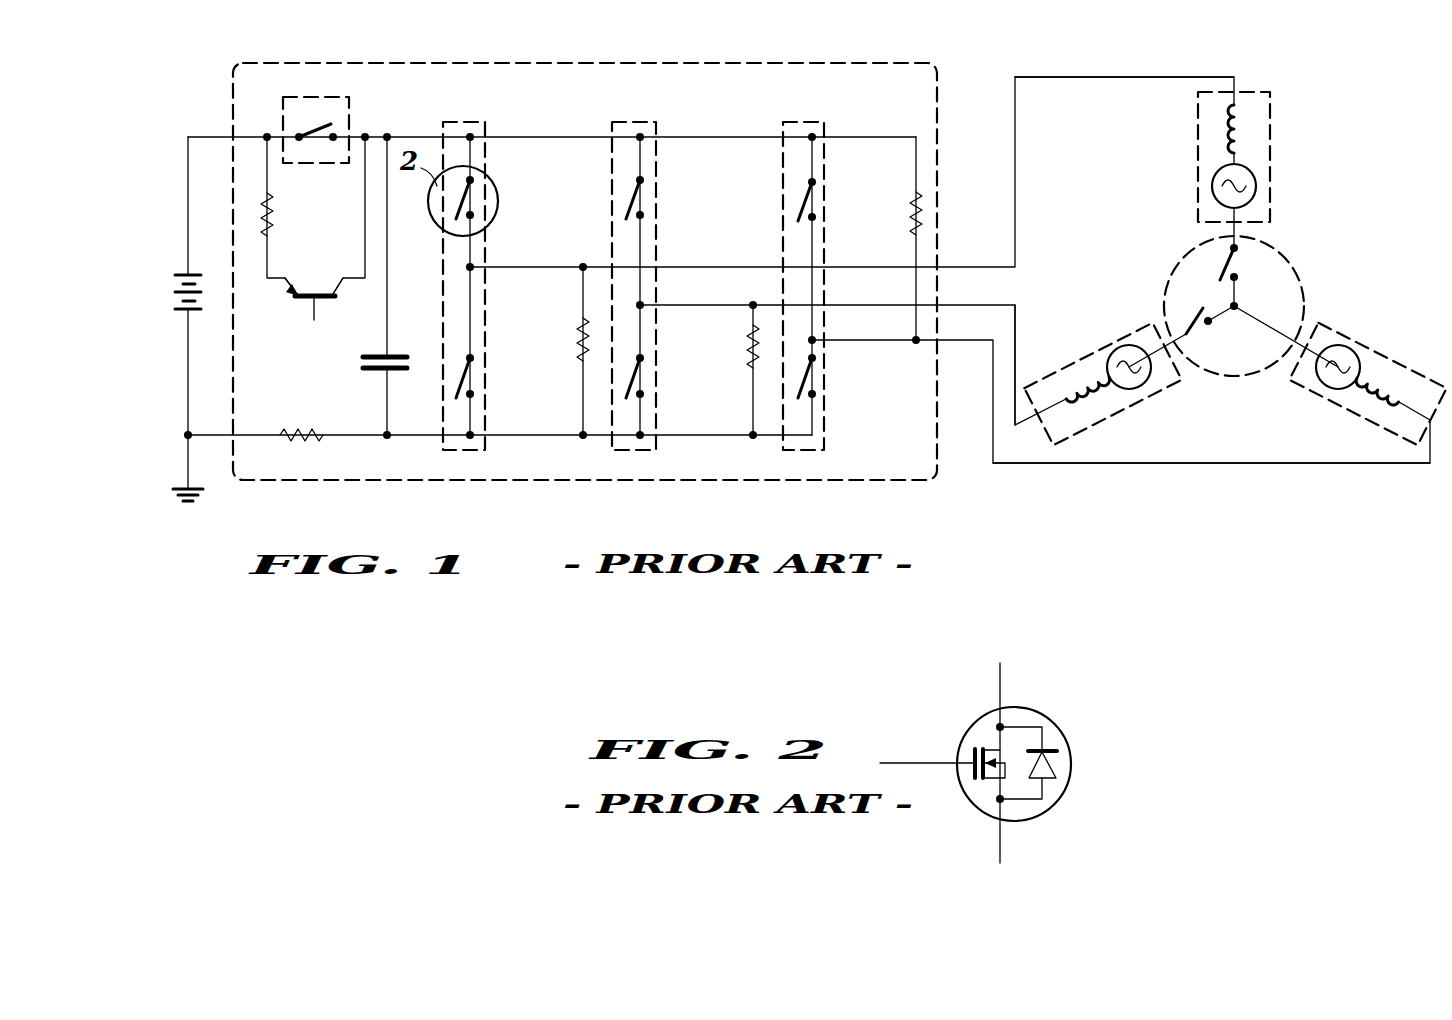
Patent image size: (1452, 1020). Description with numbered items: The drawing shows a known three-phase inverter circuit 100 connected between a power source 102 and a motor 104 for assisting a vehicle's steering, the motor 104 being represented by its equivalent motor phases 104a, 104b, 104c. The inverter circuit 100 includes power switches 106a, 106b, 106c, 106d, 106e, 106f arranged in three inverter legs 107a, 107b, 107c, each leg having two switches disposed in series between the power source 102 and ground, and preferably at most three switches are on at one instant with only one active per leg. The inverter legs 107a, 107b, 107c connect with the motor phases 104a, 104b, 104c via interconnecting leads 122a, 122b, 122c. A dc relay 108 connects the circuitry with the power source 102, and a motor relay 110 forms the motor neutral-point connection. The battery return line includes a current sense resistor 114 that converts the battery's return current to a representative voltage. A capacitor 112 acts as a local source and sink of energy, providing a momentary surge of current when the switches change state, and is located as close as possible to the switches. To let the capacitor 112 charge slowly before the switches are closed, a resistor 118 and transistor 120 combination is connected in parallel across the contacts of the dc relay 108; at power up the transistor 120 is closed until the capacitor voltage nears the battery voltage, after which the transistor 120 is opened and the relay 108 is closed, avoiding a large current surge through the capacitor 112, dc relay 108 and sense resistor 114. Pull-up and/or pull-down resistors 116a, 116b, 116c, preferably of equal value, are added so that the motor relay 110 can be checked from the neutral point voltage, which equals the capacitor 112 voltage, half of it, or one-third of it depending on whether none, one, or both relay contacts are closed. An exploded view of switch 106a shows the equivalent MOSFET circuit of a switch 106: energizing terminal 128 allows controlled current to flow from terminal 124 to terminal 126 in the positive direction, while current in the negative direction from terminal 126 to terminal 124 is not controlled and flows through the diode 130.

In FIG. 1, the inverter circuit 100 is at (605, 482).
In FIG. 1, the power source 102 is at (178, 290).
In FIG. 1, the motor 104 is at (997, 493).
In FIG. 1, the motor phase 104a is at (1272, 144).
In FIG. 1, the motor phase 104b is at (1135, 405).
In FIG. 1, the motor phase 104c is at (1394, 354).
In FIG. 2, the switch 106 is at (1055, 722).
In FIG. 1, the switch 106a is at (489, 201).
In FIG. 1, the switch 106b is at (653, 197).
In FIG. 1, the switch 106c is at (821, 197).
In FIG. 1, the switch 106d is at (481, 372).
In FIG. 1, the switch 106e is at (653, 372).
In FIG. 1, the switch 106f is at (821, 372).
In FIG. 1, the inverter leg 107a is at (467, 120).
In FIG. 1, the inverter leg 107b is at (637, 120).
In FIG. 1, the inverter leg 107c is at (809, 120).
In FIG. 1, the dc relay 108 is at (323, 164).
In FIG. 1, the motor relay 110 is at (1292, 270).
In FIG. 1, the capacitor 112 is at (361, 362).
In FIG. 1, the current sense resistor 114 is at (296, 430).
In FIG. 1, the pull-up/pull-down resistor 116a is at (927, 206).
In FIG. 1, the pull-up/pull-down resistor 116b is at (580, 323).
In FIG. 1, the pull-up/pull-down resistor 116c is at (750, 336).
In FIG. 1, the resistor 118 is at (274, 228).
In FIG. 1, the transistor 120 is at (295, 300).
In FIG. 1, the interconnecting lead 122a is at (1121, 78).
In FIG. 1, the interconnecting lead 122b is at (1022, 318).
In FIG. 1, the interconnecting lead 122c is at (1272, 462).
In FIG. 2, the terminal 124 is at (1000, 684).
In FIG. 2, the terminal 126 is at (1000, 839).
In FIG. 2, the terminal 128 is at (931, 760).
In FIG. 2, the diode 130 is at (1061, 764).